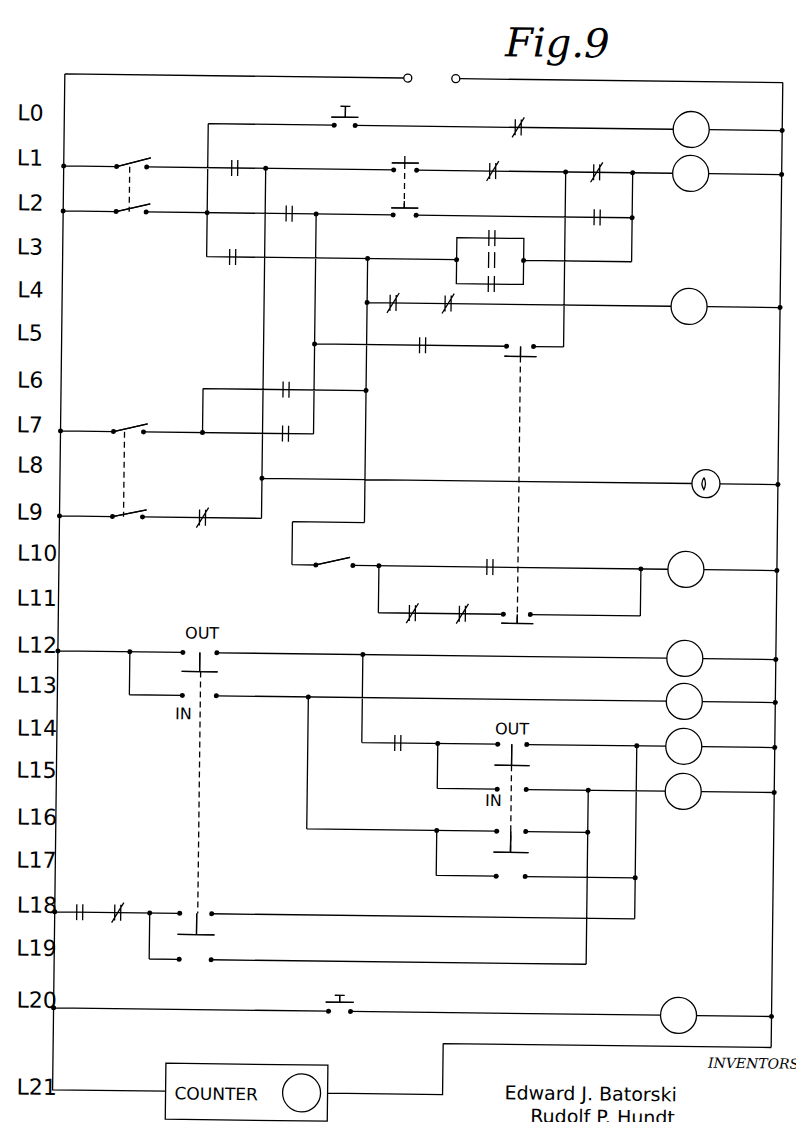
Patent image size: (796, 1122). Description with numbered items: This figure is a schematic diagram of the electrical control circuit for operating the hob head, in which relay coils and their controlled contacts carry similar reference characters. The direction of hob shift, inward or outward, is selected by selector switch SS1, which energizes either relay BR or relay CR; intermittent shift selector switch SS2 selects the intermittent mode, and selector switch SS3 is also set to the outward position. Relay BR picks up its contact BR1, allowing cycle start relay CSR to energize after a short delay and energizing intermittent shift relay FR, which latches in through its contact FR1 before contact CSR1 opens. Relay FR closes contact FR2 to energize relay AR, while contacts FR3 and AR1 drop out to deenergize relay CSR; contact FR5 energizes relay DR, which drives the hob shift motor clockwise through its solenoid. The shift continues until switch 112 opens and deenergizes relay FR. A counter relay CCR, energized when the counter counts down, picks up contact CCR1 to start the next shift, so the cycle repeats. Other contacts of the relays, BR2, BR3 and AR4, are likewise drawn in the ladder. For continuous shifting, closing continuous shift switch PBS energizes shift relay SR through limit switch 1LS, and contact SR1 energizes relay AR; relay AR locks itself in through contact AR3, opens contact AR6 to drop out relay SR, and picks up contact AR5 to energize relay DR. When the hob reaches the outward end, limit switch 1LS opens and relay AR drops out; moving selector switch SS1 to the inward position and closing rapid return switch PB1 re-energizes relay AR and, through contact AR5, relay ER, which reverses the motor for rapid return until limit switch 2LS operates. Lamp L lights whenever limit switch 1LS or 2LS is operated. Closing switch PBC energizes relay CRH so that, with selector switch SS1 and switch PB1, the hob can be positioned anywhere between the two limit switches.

The continuous shift switch PBS is at (328, 113).
The rapid return switch PB1 is at (398, 157).
The limit switch 1LS is at (125, 212).
The limit switch 2LS is at (124, 428).
The contact BR1 is at (225, 251).
The contact BR2 is at (238, 161).
The contact BR3 is at (203, 510).
The contact AR1 is at (389, 293).
The contact AR3 is at (496, 291).
The contact AR4 is at (419, 356).
The contact AR5 is at (84, 927).
The contact AR6 is at (519, 119).
The contact SR1 is at (490, 231).
The contact FR1 is at (490, 560).
The contact FR2 is at (483, 262).
The contact FR3 is at (446, 312).
The contact FR5 is at (398, 737).
The intermittent shift relay FR is at (121, 908).
The cycle start relay CSR is at (491, 167).
The contact CSR1 is at (412, 604).
The contact CCR1 is at (463, 604).
The relay CRH is at (595, 161).
The relay CR is at (288, 206).
The selector switch SS1 is at (220, 677).
The intermittent shift selector switch SS2 is at (535, 485).
The selector switch SS3 is at (533, 765).
The switch 112 is at (340, 560).
The lamp L is at (699, 468).
The switch PBC is at (353, 1004).
The shift relay SR is at (691, 129).
The relay AR is at (690, 173).
The relay BR is at (685, 658).
The relay DR is at (684, 746).
The relay ER is at (683, 791).
The counter relay CCR is at (301, 1093).